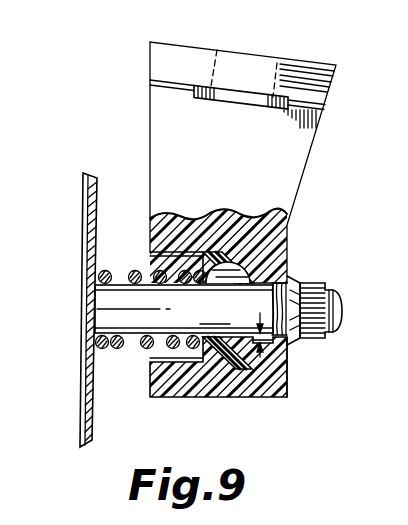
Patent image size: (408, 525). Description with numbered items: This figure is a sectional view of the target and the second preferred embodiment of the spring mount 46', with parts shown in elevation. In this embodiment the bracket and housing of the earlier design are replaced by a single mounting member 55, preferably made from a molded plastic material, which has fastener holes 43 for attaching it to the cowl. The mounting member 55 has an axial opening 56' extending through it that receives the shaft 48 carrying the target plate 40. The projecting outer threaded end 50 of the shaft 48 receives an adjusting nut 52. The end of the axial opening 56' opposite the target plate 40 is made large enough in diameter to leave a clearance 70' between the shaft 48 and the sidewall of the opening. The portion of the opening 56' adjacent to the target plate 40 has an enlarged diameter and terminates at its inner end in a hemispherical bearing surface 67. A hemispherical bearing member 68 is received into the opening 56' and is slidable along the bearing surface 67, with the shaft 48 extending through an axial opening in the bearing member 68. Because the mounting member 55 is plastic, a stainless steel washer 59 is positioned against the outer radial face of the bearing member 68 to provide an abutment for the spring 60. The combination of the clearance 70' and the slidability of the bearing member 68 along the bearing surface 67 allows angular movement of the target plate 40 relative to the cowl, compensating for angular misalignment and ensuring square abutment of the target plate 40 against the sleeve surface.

The target plate 40 is at (82, 400).
The fastener holes 43 is at (278, 75).
The spring mount 46' is at (252, 340).
The shaft 48 is at (184, 309).
The outer threaded end 50 is at (342, 303).
The adjusting nut 52 is at (303, 342).
The mounting member 55 is at (160, 118).
The axial opening 56' is at (148, 390).
The stainless steel washer 59 is at (203, 252).
The spring 60 is at (105, 270).
The hemispherical bearing surface 67 is at (223, 370).
The hemispherical bearing member 68 is at (233, 267).
The clearance 70' is at (286, 384).